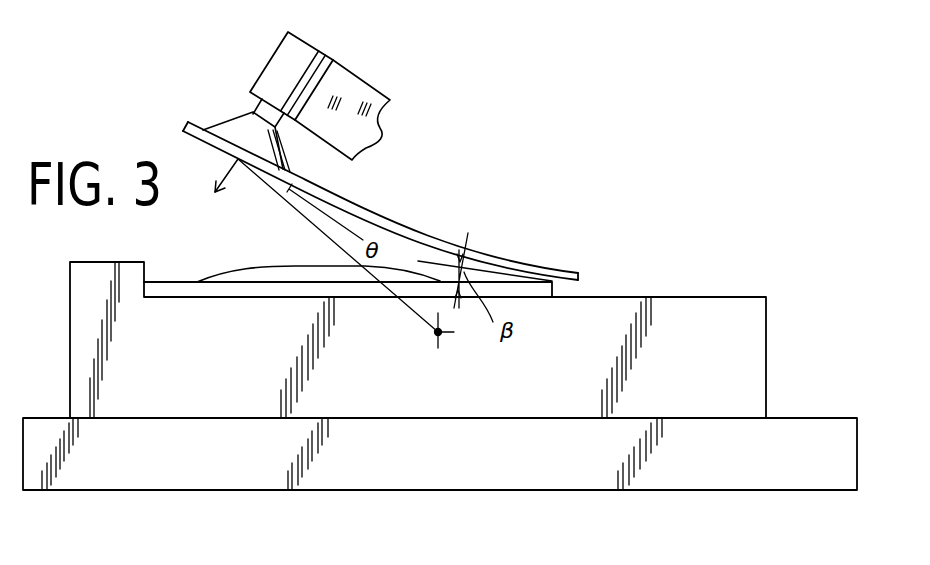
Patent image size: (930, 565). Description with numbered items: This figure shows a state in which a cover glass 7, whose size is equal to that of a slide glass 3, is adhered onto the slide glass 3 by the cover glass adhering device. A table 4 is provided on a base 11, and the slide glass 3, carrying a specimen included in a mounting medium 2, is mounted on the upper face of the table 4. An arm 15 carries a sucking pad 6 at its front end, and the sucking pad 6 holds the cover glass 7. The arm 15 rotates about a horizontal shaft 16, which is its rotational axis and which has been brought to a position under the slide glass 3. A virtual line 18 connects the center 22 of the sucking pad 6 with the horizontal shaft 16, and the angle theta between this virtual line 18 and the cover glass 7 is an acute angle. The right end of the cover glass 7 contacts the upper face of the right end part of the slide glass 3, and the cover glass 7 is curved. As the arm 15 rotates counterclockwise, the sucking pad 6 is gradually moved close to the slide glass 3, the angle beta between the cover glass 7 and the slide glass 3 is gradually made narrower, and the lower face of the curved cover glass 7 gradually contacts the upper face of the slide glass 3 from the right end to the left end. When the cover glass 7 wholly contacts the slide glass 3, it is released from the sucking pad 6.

The mounting medium 2 is at (278, 266).
The slide glass 3 is at (209, 291).
The table 4 is at (700, 305).
The sucking pad 6 is at (236, 124).
The cover glass 7 is at (355, 203).
The base 11 is at (803, 430).
The arm 15 is at (350, 88).
The horizontal shaft 16 is at (434, 332).
The virtual line 18 is at (377, 278).
The center of the sucking pad 22 is at (239, 167).